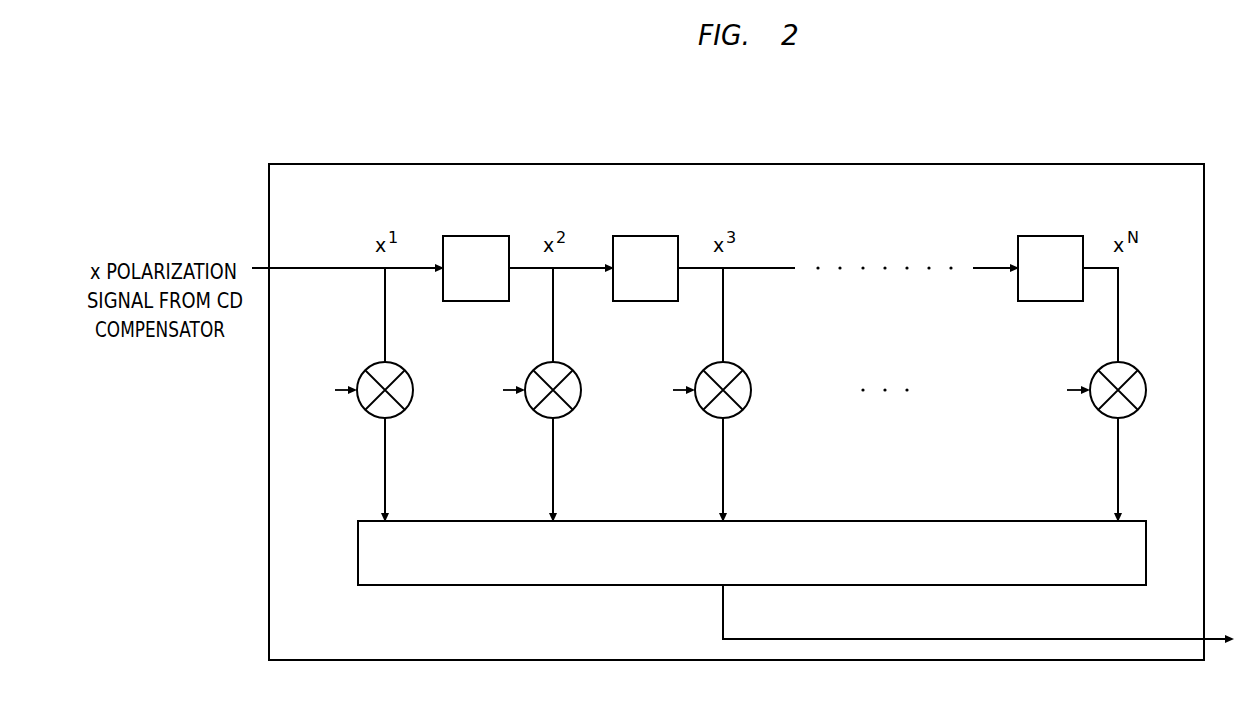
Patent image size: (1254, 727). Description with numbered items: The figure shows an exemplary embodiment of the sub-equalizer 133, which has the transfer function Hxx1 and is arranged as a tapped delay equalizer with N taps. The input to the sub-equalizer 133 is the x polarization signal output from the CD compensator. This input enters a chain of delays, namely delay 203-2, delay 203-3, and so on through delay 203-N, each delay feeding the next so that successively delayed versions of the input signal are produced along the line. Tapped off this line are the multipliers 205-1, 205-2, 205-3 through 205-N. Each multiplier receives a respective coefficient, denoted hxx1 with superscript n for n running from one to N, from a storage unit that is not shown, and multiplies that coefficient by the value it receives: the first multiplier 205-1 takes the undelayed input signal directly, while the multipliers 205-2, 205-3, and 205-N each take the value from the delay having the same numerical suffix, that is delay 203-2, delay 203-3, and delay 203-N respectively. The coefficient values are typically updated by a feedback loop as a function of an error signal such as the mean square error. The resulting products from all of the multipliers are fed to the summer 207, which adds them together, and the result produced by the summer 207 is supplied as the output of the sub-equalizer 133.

The sub-equalizer 133 is at (1158, 164).
The delay 203-2 is at (487, 236).
The delay 203-3 is at (655, 236).
The delay 203-N is at (1062, 236).
The multiplier 205-1 is at (407, 371).
The multiplier 205-2 is at (575, 371).
The multiplier 205-3 is at (745, 371).
The multiplier 205-N is at (1140, 371).
The summer 207 is at (952, 521).